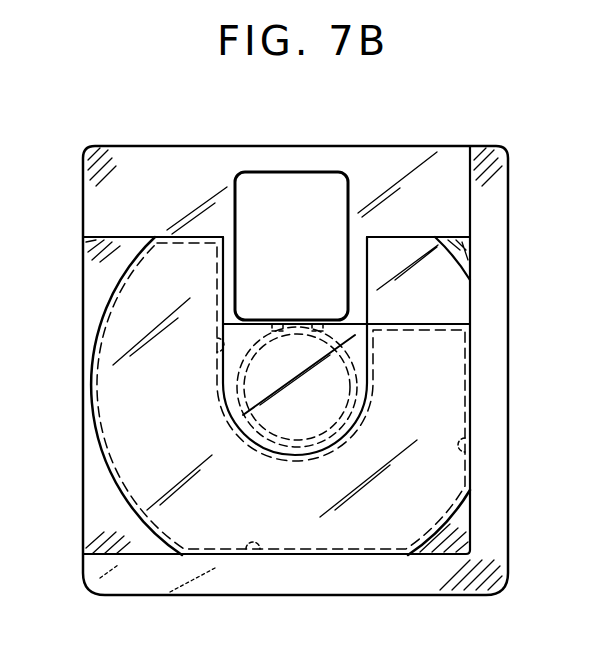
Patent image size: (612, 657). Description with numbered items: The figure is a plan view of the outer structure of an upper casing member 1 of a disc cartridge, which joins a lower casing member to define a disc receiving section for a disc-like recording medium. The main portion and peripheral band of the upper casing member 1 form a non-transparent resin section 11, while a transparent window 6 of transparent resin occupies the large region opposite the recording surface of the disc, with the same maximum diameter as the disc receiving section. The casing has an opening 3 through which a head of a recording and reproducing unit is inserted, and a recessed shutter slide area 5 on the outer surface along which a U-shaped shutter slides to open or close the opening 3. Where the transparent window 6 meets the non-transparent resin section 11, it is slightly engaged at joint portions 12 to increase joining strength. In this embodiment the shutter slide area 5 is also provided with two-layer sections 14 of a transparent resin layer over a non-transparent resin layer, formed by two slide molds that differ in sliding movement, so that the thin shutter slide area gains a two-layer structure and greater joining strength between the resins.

The upper casing member 1 is at (95, 143).
The opening 3 is at (294, 170).
The shutter slide area 5 is at (420, 160).
The transparent window 6 is at (440, 407).
The non-transparent resin section 11 is at (166, 147).
The joint portion 12 is at (230, 343).
The two-layer section 14 is at (92, 252).